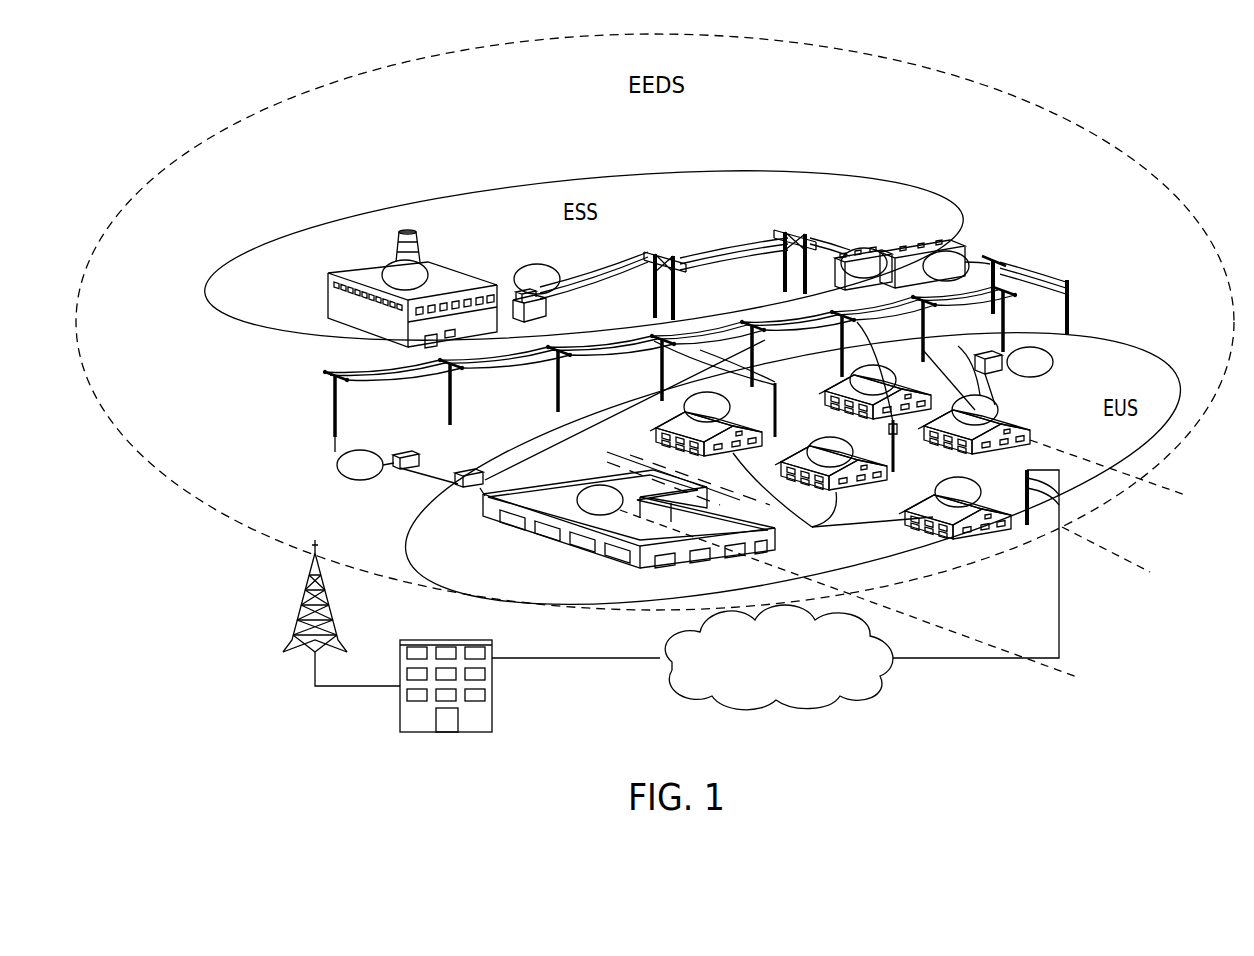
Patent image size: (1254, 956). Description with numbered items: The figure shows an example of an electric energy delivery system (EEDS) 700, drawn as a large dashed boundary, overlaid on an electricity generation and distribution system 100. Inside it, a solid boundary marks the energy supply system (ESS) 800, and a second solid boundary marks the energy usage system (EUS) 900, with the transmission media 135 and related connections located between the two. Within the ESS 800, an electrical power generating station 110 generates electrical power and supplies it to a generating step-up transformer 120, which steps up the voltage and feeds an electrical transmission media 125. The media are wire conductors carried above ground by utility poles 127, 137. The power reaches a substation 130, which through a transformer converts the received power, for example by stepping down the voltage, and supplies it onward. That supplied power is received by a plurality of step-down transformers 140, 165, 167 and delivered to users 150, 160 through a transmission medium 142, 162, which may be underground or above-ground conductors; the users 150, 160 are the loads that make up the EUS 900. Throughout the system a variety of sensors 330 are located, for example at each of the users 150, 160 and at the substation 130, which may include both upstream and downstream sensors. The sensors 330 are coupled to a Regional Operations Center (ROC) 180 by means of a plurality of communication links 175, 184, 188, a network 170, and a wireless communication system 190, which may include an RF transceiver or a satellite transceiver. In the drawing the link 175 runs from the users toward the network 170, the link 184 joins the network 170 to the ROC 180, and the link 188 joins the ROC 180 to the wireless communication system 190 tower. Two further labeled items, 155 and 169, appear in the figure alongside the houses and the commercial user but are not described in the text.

The electricity generation and distribution system 100 is at (1000, 212).
The electrical power generating station 110 is at (440, 283).
The generating step-up transformer 120 is at (517, 296).
The electrical transmission media 125 is at (578, 283).
The utility pole 127 is at (657, 254).
The substation 130 is at (935, 258).
The transmission media 135 is at (1002, 262).
The utility pole 137 is at (1072, 313).
The step-down transformer 140 is at (1002, 358).
The transmission medium 142 is at (1008, 408).
The users 150 is at (830, 465).
The service drop 155 is at (968, 378).
The user 160 is at (573, 525).
The transmission medium 162 is at (475, 493).
The step-down transformer 165 is at (397, 453).
The step-down transformer 167 is at (466, 471).
The meter 169 is at (588, 488).
The network 170 is at (843, 702).
The communication link 175 is at (987, 660).
The Regional Operations Center (ROC) 180 is at (493, 690).
The communication link 184 is at (600, 660).
The communication link 188 is at (329, 688).
The wireless communication system 190 is at (305, 598).
The sensor 330 is at (1043, 372).
The electric energy delivery system (EEDS) 700 is at (920, 62).
The energy supply system (ESS) 800 is at (780, 172).
The energy usage system (EUS) 900 is at (1157, 362).